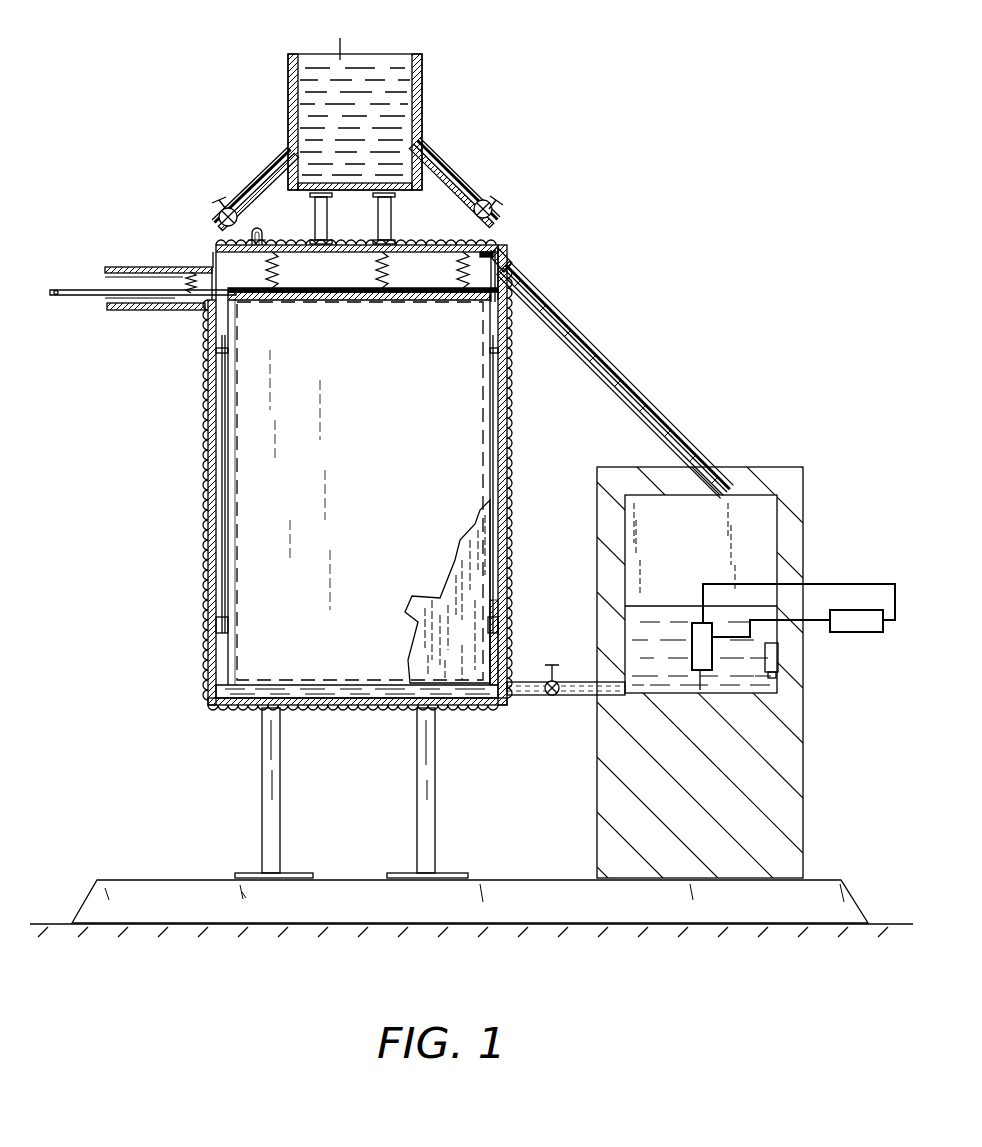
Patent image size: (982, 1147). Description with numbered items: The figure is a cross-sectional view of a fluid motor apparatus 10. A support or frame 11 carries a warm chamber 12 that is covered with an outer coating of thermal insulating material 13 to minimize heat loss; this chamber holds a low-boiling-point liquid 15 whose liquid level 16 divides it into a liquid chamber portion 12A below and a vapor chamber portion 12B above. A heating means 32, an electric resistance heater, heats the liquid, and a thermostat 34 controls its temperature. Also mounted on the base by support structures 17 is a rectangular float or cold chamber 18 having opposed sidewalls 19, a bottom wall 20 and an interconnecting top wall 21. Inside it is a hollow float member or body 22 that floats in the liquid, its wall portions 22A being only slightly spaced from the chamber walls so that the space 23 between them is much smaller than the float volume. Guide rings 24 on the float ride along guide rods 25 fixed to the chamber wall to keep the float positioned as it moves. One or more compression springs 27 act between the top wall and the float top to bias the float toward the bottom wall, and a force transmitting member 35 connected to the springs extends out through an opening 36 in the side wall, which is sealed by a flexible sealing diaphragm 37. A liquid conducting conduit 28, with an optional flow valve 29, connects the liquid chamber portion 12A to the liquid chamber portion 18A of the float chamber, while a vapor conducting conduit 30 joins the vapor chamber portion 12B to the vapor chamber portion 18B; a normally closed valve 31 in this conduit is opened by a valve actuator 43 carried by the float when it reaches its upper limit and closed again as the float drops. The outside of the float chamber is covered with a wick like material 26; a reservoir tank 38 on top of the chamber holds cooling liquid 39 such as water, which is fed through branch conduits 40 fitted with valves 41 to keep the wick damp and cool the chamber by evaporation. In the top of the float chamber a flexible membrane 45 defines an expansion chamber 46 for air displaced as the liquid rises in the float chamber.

The fluid motor apparatus 10 is at (553, 98).
The support or frame 11 is at (579, 914).
The warm chamber 12 is at (803, 513).
The liquid chamber portion 12A is at (680, 664).
The vapor chamber portion 12B is at (705, 536).
The thermal insulating material 13 is at (792, 487).
The liquid 15 is at (770, 633).
The liquid level 16 is at (648, 603).
The support structures 17 is at (280, 792).
The float chamber or cold chamber 18 is at (510, 393).
The liquid chamber portion 18A is at (507, 645).
The vapor chamber portion 18B is at (433, 263).
The sidewalls 19 is at (322, 279).
The bottom wall 20 is at (335, 690).
The top wall 21 is at (460, 177).
The float member or body 22 is at (472, 472).
The wall portions 22A is at (303, 322).
The space 23 is at (216, 606).
The guide rings 24 is at (215, 352).
The guide rods 25 is at (213, 465).
The wick like material 26 is at (205, 515).
The compression springs 27 is at (276, 290).
The liquid conducting conduit 28 is at (570, 680).
The flow valve 29 is at (552, 703).
The vapor conducting conduit 30 is at (588, 337).
The valve 31 is at (510, 250).
The heating means 32 is at (700, 690).
The thermostat 34 is at (783, 680).
The force transmitting member 35 is at (100, 296).
The opening 36 is at (167, 303).
The sealing diaphragm 37 is at (187, 270).
The reservoir tank 38 is at (424, 75).
The cooling liquid 39 is at (334, 28).
The branch conduits 40 is at (256, 178).
The valves 41 is at (228, 204).
The valve actuator 43 is at (503, 272).
The flexible membrane 45 is at (265, 240).
The expansion chamber 46 is at (253, 240).